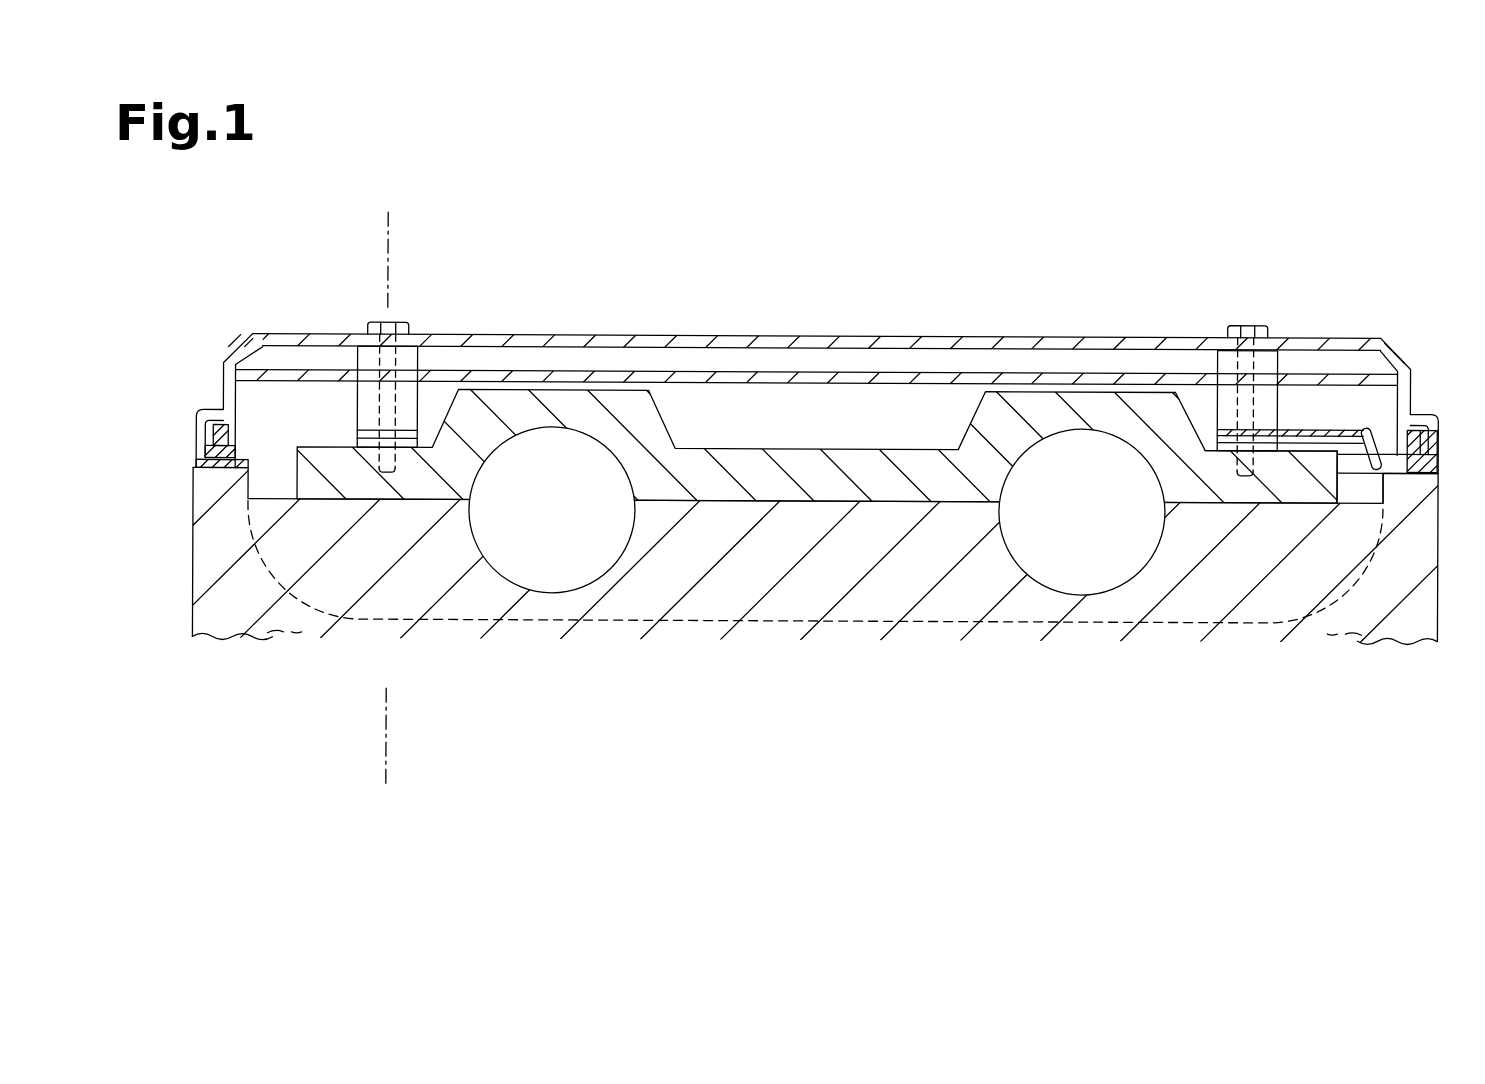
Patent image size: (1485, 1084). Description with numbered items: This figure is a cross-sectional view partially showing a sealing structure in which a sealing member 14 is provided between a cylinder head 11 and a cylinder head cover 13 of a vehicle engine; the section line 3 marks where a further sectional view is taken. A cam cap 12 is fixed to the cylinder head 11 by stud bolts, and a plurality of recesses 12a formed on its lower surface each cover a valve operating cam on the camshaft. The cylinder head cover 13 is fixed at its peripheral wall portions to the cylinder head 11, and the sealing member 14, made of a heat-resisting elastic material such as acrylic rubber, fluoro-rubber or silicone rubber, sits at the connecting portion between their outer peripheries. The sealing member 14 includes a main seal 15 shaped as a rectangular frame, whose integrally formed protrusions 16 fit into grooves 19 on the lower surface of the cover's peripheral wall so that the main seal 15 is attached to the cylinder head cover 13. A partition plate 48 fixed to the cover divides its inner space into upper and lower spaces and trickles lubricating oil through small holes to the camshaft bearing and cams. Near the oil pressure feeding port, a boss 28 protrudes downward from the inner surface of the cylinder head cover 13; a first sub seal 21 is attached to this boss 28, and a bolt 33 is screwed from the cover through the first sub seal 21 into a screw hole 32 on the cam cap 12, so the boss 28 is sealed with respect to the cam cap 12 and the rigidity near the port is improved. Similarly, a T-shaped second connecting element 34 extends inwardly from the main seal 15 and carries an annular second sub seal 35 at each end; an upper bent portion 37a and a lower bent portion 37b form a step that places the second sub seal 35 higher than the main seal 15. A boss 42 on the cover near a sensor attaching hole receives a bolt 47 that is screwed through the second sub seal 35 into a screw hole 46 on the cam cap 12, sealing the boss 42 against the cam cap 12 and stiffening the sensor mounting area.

The section line III-III 3 is at (374, 236).
The cylinder head 11 is at (201, 583).
The cam cap 12 is at (868, 452).
The recesses 12a is at (598, 447).
The cylinder head cover 13 is at (860, 336).
The sealing member 14 is at (198, 462).
The main seal 15 is at (209, 472).
The protrusions 16 is at (205, 427).
The grooves 19 is at (230, 433).
The first sub seal 21 is at (357, 432).
The boss 28 is at (418, 398).
The screw hole 32 is at (380, 478).
The bolt 33 is at (374, 322).
The second connecting element 34 is at (1328, 454).
The second sub seal 35 is at (1218, 452).
The upper bent portion 37a is at (1354, 430).
The lower bent portion 37b is at (1378, 431).
The boss 42 is at (1212, 403).
The screw hole 46 is at (1255, 478).
The bolt 47 is at (1246, 324).
The partition plate 48 is at (750, 372).